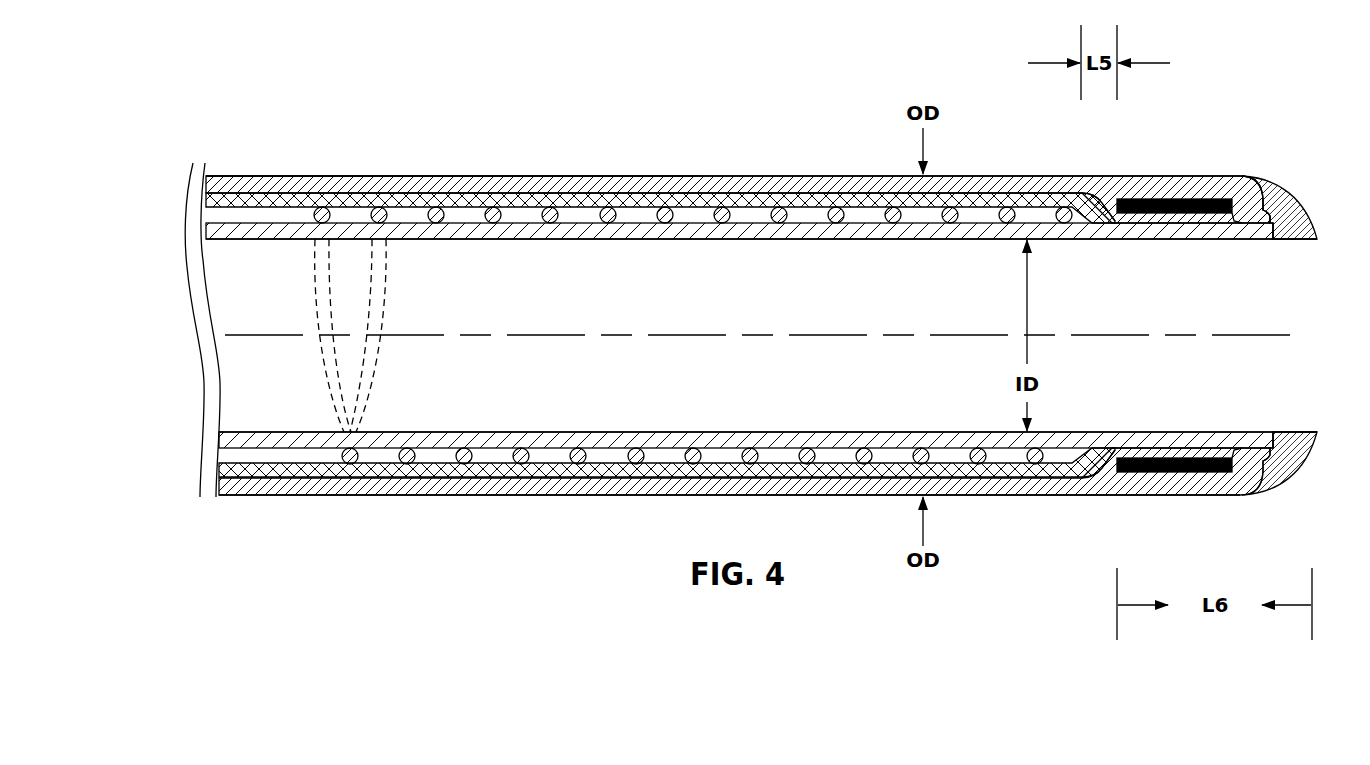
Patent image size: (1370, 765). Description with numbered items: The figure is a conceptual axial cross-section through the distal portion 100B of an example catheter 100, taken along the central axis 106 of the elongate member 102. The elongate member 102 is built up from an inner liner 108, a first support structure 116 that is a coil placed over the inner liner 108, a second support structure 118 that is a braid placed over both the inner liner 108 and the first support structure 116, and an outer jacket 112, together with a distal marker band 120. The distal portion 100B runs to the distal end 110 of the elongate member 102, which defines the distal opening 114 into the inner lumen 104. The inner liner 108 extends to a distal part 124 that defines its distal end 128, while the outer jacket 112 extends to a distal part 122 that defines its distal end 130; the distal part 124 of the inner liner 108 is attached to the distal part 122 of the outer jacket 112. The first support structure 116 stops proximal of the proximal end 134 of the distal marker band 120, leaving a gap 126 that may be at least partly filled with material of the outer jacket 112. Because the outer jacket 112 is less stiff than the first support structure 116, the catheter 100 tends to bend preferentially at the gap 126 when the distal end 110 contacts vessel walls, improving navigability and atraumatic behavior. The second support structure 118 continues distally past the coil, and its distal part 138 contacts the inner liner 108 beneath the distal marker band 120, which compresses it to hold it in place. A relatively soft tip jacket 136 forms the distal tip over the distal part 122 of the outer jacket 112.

The distal portion 100B is at (175, 148).
The catheter 100 is at (392, 130).
The elongate member 102 is at (553, 166).
The inner lumen 104 is at (805, 372).
The central axis 106 is at (641, 333).
The inner liner 108 is at (638, 228).
The distal end 110 is at (1322, 237).
The outer jacket 112 is at (286, 186).
The distal opening 114 is at (1299, 331).
The first support structure 116 is at (352, 466).
The second support structure 118 is at (467, 468).
The distal marker band 120 is at (1178, 472).
The distal part of outer jacket 122 is at (1257, 463).
The distal part of inner liner 124 is at (1262, 229).
The gap 126 is at (1110, 203).
The distal end of inner liner 128 is at (1281, 431).
The distal end of outer jacket 130 is at (1300, 448).
The proximal end of distal marker band 134 is at (1117, 470).
The tip jacket 136 is at (1280, 204).
The distal part of second support structure 138 is at (1180, 216).